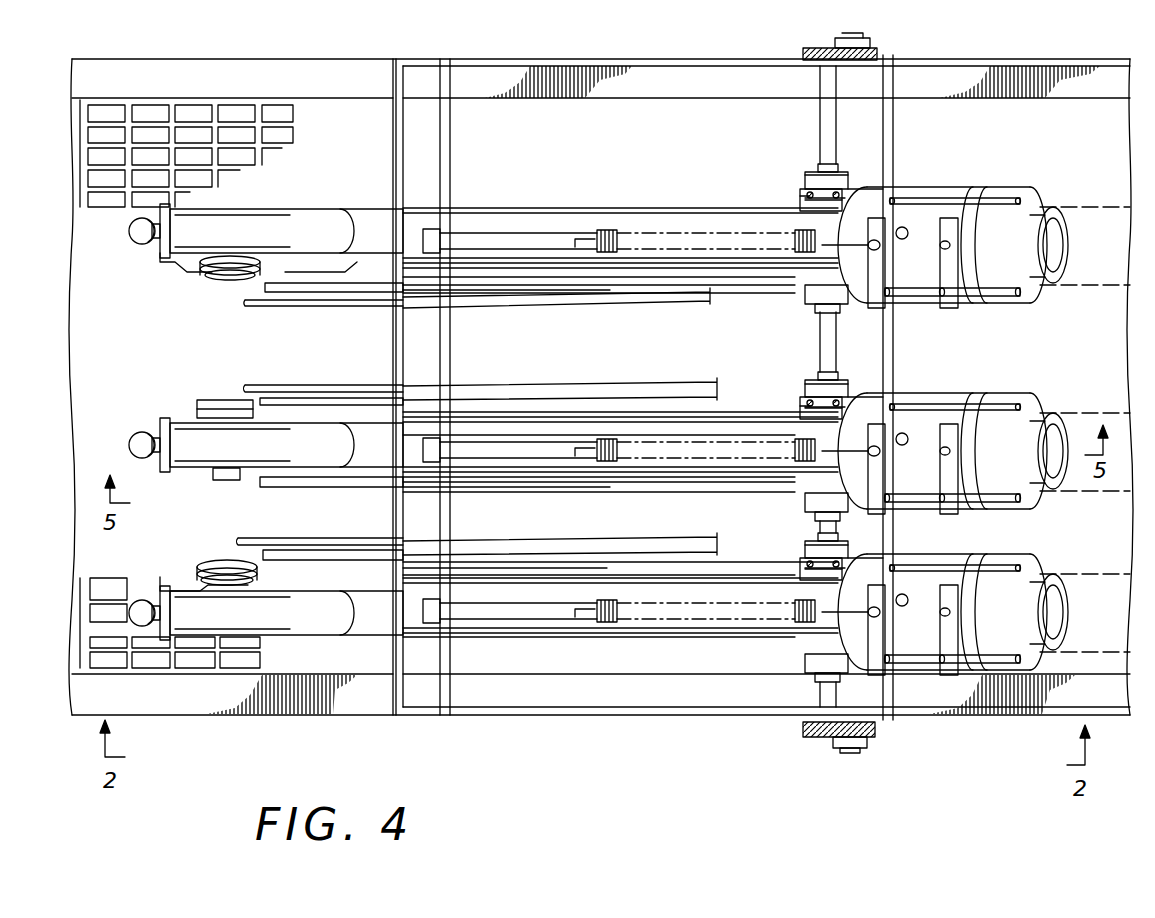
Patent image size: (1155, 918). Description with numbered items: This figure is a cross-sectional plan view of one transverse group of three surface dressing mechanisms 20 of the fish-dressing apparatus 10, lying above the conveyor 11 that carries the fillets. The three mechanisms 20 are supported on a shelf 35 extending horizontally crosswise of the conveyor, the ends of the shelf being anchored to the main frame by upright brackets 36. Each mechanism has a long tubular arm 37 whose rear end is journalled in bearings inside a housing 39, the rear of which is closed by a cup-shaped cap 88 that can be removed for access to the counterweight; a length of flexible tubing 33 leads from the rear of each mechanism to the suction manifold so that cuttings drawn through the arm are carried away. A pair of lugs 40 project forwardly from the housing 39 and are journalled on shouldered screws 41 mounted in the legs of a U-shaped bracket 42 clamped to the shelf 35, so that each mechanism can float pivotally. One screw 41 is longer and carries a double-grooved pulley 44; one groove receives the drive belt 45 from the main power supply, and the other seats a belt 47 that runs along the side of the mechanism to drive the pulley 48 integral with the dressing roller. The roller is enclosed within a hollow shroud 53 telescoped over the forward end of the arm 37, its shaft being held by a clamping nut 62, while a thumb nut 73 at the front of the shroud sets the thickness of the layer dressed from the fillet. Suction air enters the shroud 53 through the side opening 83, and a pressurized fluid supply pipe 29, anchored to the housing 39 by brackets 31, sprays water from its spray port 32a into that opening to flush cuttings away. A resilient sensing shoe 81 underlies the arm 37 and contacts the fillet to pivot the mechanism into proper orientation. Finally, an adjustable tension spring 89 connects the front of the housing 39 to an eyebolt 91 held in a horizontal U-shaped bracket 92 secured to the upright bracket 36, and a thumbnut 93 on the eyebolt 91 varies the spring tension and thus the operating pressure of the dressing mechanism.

The apparatus 10 is at (622, 737).
The conveyor 11 is at (150, 105).
The surface dressing mechanism 20 is at (660, 203).
The pressurized fluid supply pipe 29 is at (650, 308).
The bracket 31 is at (940, 266).
The spray port 32a is at (330, 305).
The flexible tubing 33 is at (1085, 207).
The shelf 35 is at (895, 128).
The upright bracket 36 is at (878, 55).
The tubular arm 37 is at (553, 207).
The housing 39 is at (942, 187).
The lug 40 is at (804, 196).
The shouldered screw 41 is at (830, 170).
The U-shaped bracket 42 is at (804, 180).
The pulley 44 is at (790, 302).
The belt 45 is at (790, 292).
The belt 47 is at (302, 305).
The pulley 48 is at (212, 280).
The shroud 53 is at (272, 212).
The clamping nut 62 is at (230, 480).
The thumb nut 73 is at (136, 236).
The sensing shoe 81 is at (358, 300).
The opening 83 is at (258, 255).
The cap 88 is at (1008, 188).
The tension spring 89 is at (605, 228).
The eyebolt 91 is at (502, 228).
The U-shaped bracket 92 is at (452, 333).
The thumbnut 93 is at (438, 220).